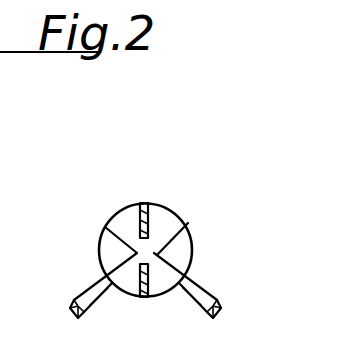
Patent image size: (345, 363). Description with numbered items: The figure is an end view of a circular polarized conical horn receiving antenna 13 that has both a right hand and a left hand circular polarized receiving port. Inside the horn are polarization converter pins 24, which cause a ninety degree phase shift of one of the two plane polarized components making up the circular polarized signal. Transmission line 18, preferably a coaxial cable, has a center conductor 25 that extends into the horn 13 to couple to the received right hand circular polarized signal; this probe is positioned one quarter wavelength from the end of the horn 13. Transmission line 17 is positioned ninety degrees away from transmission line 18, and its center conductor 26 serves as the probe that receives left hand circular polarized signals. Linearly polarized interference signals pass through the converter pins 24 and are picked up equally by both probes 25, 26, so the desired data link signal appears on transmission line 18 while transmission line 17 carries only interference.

The circular polarized conical horn receiving antenna 13 is at (134, 205).
The transmission line 17 is at (86, 284).
The transmission line 18 is at (202, 284).
The polarization converter pins 24 is at (159, 249).
The center conductor 25 is at (188, 220).
The center conductor 26 is at (100, 223).